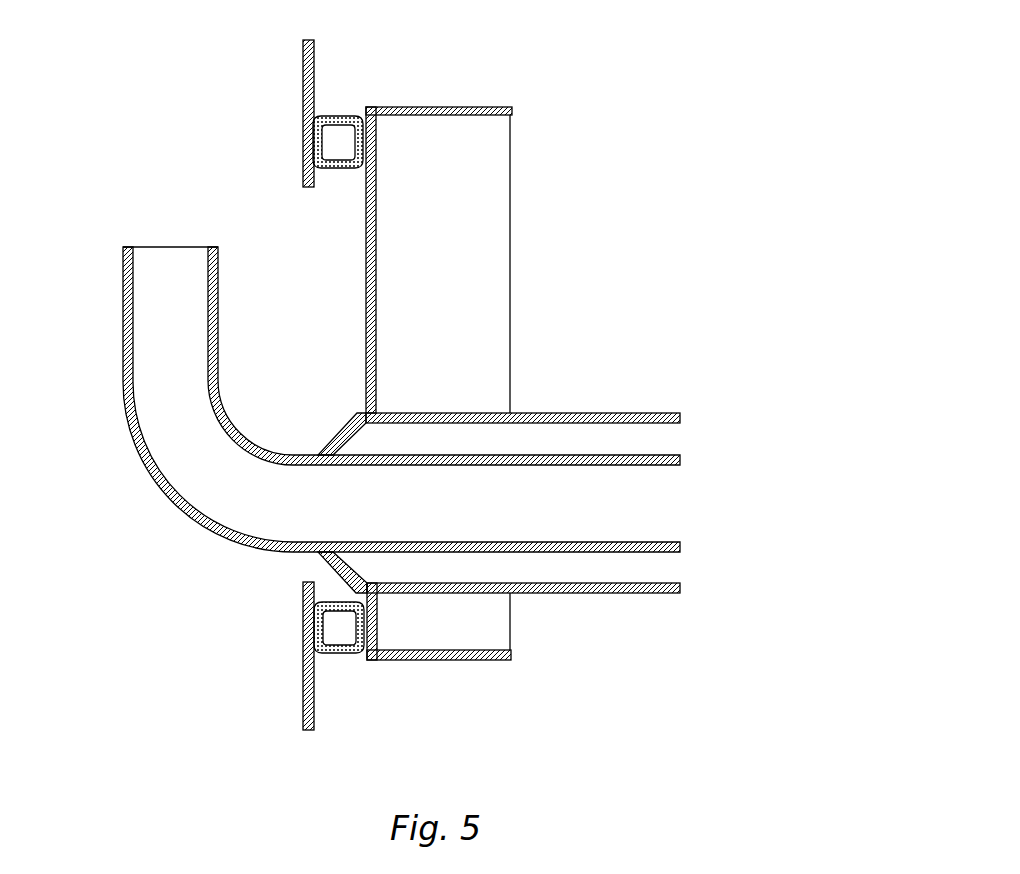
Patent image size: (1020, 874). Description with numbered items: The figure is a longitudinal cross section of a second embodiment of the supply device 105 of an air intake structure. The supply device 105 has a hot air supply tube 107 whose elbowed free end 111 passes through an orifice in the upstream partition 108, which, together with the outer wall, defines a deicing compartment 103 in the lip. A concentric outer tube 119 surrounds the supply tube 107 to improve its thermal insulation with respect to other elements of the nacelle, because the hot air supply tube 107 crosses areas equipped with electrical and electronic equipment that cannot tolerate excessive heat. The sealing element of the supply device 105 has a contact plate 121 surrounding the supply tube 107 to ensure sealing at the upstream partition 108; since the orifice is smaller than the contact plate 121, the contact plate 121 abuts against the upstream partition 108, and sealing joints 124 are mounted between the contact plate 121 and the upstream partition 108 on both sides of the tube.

The deicing compartment 103 is at (88, 202).
The supply device 105 is at (479, 383).
The hot air supply tube 107 is at (347, 399).
The upstream partition 108 is at (303, 96).
The elbowed free end 111 is at (123, 274).
The concentric outer tube 119 is at (603, 413).
The contact plate 121 is at (366, 253).
The sealing joint 124 is at (342, 140).